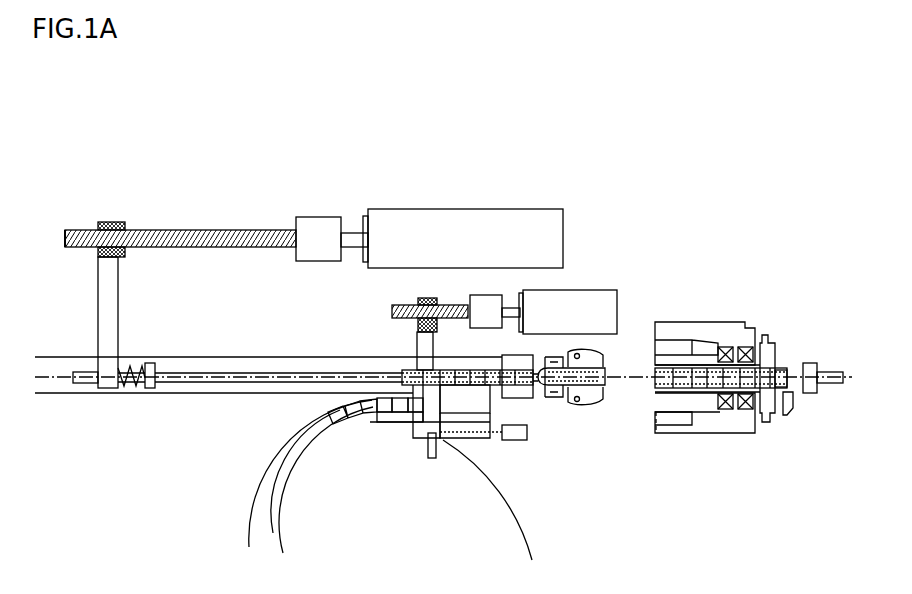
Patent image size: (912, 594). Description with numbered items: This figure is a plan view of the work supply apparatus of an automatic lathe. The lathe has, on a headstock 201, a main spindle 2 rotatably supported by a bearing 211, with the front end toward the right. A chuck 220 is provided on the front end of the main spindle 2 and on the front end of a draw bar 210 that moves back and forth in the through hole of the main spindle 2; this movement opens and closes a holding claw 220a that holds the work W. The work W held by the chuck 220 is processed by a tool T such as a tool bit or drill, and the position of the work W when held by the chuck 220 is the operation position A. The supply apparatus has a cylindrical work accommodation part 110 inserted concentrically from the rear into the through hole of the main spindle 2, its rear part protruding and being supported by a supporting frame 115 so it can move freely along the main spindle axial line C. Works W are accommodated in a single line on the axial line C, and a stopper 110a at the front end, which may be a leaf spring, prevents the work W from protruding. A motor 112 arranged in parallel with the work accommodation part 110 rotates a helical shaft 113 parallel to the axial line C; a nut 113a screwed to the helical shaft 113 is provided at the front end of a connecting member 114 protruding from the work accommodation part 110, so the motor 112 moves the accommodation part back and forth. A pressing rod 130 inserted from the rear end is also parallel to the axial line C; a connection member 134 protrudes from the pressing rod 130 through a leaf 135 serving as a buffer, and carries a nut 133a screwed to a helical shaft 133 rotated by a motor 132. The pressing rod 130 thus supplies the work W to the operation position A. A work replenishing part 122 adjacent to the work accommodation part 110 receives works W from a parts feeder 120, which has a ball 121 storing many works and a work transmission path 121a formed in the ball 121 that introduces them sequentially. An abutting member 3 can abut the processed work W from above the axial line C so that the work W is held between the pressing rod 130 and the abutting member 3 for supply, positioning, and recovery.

The main spindle axial line C is at (68, 374).
The supporting frame 115 is at (237, 363).
The helical shaft 133 is at (232, 230).
The nut 133a is at (112, 222).
The connection member 134 is at (118, 303).
The motor 132 is at (474, 212).
The helical shaft 113 is at (460, 305).
The nut 113a is at (428, 298).
The connecting member 114 is at (417, 344).
The motor 112 is at (587, 290).
The pressing rod 130 is at (215, 378).
The leaf 135 is at (137, 385).
The work accommodation part 110 is at (525, 389).
The work W is at (340, 417).
The work replenishing part 122 is at (449, 455).
The ball 121 is at (248, 532).
The work transmission path 121a is at (263, 502).
The parts feeder 120 is at (227, 482).
The headstock 201 is at (663, 327).
The main spindle 2 is at (701, 353).
The bearing 211 is at (727, 405).
The draw bar 210 is at (683, 393).
The chuck 220 is at (712, 397).
The holding claw 220a is at (780, 362).
The stopper 110a is at (758, 368).
The abutting member 3 is at (810, 362).
The tool T is at (790, 415).
The operation position A is at (793, 393).